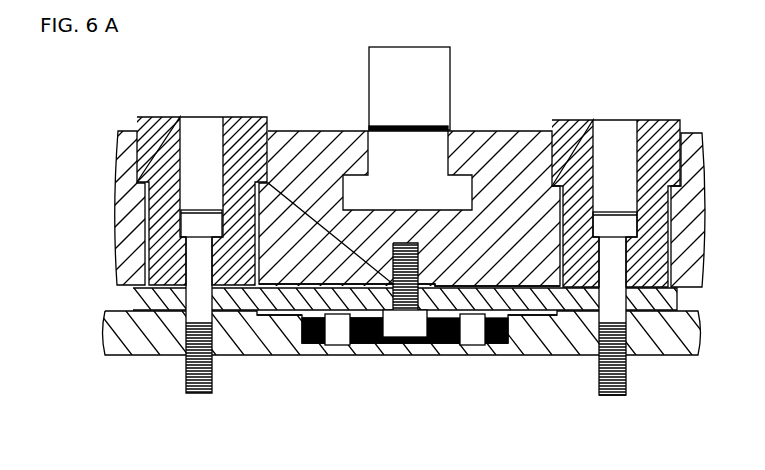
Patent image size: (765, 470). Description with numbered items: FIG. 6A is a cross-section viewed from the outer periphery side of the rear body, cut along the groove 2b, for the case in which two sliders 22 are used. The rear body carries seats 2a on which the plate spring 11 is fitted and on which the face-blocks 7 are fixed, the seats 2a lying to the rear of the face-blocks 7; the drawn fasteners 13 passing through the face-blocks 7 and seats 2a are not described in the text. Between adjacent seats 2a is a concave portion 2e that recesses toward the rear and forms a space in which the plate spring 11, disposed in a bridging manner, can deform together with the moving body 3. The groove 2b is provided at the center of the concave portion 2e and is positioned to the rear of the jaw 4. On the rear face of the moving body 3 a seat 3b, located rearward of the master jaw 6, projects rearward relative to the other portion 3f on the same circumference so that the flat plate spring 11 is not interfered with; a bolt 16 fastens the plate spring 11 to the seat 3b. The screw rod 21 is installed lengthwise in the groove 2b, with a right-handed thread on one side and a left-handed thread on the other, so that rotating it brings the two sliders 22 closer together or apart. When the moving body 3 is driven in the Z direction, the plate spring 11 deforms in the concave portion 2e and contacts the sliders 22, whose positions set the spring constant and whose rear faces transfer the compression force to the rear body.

The seat 2a is at (228, 320).
The groove 2b is at (315, 342).
The concave portion 2e is at (280, 317).
The moving body 3 is at (520, 132).
The seat 3b is at (435, 285).
The other portion 3f is at (305, 283).
The jaw 4 is at (370, 72).
The master jaw 6 is at (387, 157).
The face-block 7 is at (247, 117).
The plate spring 11 is at (447, 308).
The bolt 13 is at (183, 383).
The bolt 16 is at (402, 328).
The screw rod 21 is at (368, 340).
The slider 22 is at (338, 345).